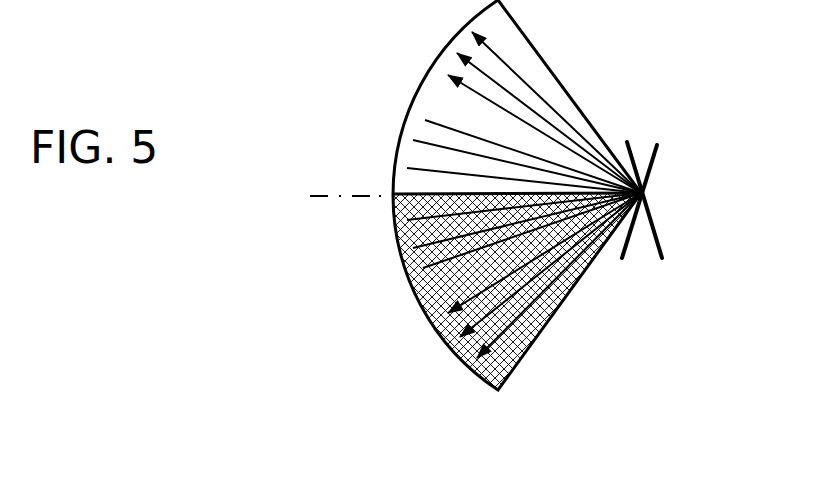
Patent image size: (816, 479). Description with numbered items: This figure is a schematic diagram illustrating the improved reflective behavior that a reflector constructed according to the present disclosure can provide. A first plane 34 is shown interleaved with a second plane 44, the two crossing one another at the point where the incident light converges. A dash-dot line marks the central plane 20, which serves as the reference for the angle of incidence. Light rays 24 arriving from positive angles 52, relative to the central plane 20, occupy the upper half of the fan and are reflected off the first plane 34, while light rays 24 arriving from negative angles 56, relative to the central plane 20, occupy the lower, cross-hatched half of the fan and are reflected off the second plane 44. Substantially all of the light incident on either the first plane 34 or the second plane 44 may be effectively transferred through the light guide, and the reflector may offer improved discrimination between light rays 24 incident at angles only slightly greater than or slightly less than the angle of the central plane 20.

The central plane 20 is at (353, 199).
The light rays 24 is at (528, 83).
The first plane 34 is at (648, 165).
The second plane 44 is at (660, 247).
The positive angles 52 is at (357, 138).
The negative angles 56 is at (396, 340).